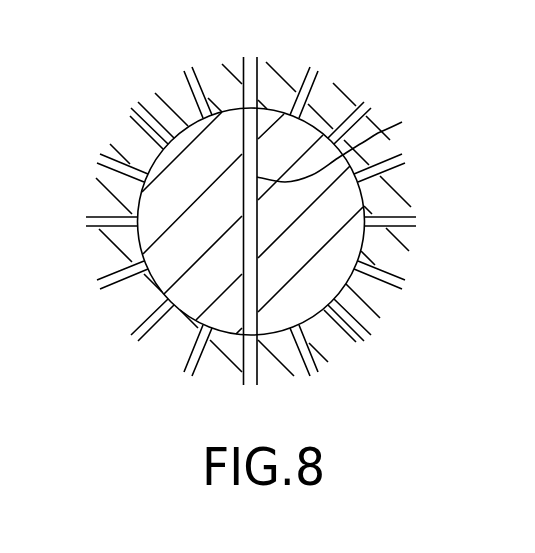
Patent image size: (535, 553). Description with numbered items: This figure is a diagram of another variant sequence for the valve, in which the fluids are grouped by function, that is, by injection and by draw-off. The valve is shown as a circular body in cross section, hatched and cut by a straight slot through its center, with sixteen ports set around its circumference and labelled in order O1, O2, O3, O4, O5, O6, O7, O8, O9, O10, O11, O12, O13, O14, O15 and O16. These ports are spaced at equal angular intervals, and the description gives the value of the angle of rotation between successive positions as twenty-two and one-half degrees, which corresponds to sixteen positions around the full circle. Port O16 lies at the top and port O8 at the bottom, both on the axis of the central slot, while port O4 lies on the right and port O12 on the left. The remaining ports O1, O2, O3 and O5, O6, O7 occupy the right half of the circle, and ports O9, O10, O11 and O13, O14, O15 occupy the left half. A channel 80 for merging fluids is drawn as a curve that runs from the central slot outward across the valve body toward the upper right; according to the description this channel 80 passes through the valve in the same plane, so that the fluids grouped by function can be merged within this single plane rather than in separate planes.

The channel for merging fluids 80 is at (342, 145).
The opening O1 is at (308, 75).
The opening O2 is at (359, 111).
The opening O3 is at (392, 165).
The opening O4 is at (402, 237).
The opening O5 is at (390, 289).
The opening O6 is at (358, 338).
The opening O7 is at (310, 374).
The opening O8 is at (250, 386).
The opening O9 is at (189, 373).
The opening O10 is at (141, 337).
The opening O11 is at (109, 294).
The opening O12 is at (95, 228).
The opening O13 is at (106, 153).
The opening O14 is at (141, 104).
The opening O15 is at (189, 71).
The opening O16 is at (251, 60).